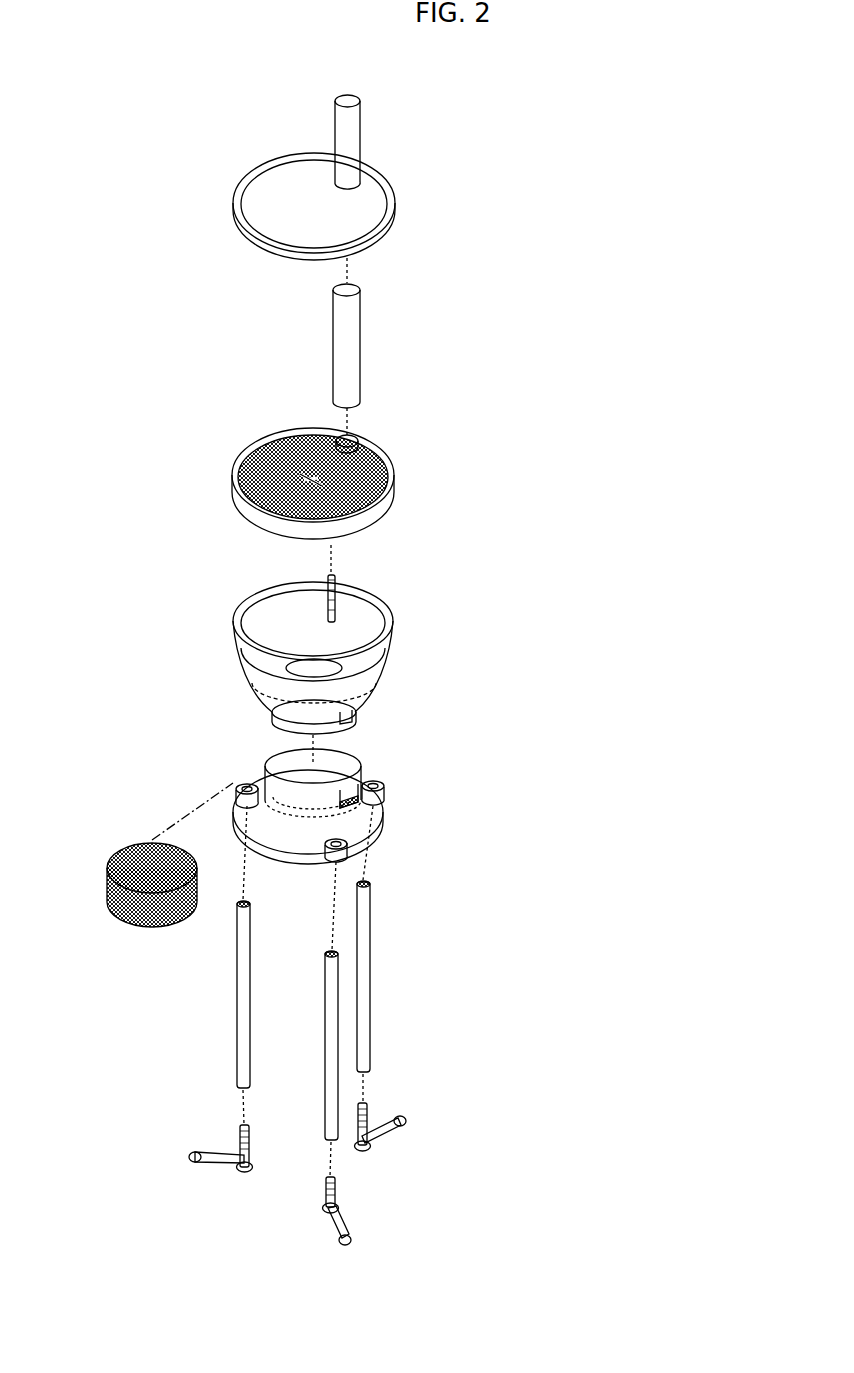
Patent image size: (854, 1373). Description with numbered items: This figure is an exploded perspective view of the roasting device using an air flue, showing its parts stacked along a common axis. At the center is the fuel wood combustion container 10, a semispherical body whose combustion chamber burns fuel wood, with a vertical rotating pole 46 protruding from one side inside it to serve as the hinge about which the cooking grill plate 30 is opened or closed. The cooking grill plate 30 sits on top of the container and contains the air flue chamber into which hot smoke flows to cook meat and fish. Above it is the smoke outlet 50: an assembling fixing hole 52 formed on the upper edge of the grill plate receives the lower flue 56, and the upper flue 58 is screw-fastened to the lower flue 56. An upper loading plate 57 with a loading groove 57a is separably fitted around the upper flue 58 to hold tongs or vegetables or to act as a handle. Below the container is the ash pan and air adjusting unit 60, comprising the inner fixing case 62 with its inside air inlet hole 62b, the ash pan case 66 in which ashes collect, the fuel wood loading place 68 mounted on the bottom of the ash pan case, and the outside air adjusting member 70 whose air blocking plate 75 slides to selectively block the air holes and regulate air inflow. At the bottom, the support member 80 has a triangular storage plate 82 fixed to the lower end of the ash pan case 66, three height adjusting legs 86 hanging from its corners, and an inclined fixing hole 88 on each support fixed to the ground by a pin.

The fuel wood combustion container 10 is at (331, 666).
The cooking grill plate 30 is at (400, 487).
The vertical rotating pole 46 is at (337, 586).
The smoke outlet 50 is at (398, 344).
The assembling fixing hole 52 is at (356, 440).
The lower flue 56 is at (342, 343).
The upper loading plate 57 is at (352, 206).
The loading groove 57a is at (360, 211).
The upper flue 58 is at (350, 140).
The ash pan and air adjusting unit 60 is at (378, 730).
The inner fixing case 62 is at (293, 718).
The inside air inlet hole 62b is at (352, 717).
The ash pan case 66 is at (300, 825).
The fuel wood loading place 68 is at (108, 890).
The outside air adjusting member 70 is at (352, 834).
The air blocking plate 75 is at (360, 800).
The support member 80 is at (405, 954).
The triangular storage plate 82 is at (372, 838).
The height adjusting legs 86 is at (366, 972).
The inclined fixing hole 88 is at (387, 1133).